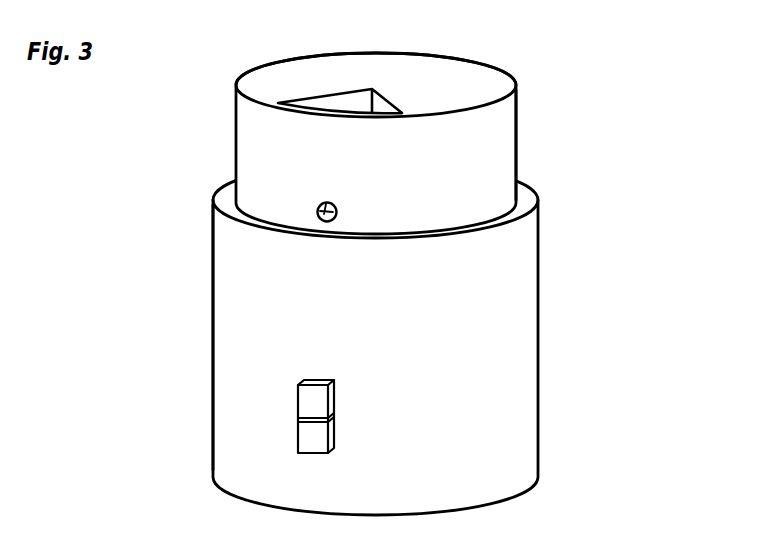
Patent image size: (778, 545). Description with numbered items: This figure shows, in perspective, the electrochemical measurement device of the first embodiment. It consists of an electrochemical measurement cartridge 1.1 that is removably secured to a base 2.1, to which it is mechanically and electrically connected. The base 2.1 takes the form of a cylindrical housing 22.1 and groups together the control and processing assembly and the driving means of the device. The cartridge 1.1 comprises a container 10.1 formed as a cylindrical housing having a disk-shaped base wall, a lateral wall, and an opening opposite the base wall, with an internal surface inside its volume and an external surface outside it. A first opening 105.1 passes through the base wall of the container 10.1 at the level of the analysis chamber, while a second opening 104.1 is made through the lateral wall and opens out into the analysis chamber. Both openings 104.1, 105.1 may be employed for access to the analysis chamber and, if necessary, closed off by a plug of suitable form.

The electrochemical measurement cartridge 1.1 is at (526, 133).
The base 2.1 is at (551, 292).
The container 10.1 is at (502, 175).
The cylindrical housing 22.1 is at (213, 337).
The second opening 104.1 is at (317, 210).
The first opening 105.1 is at (360, 103).